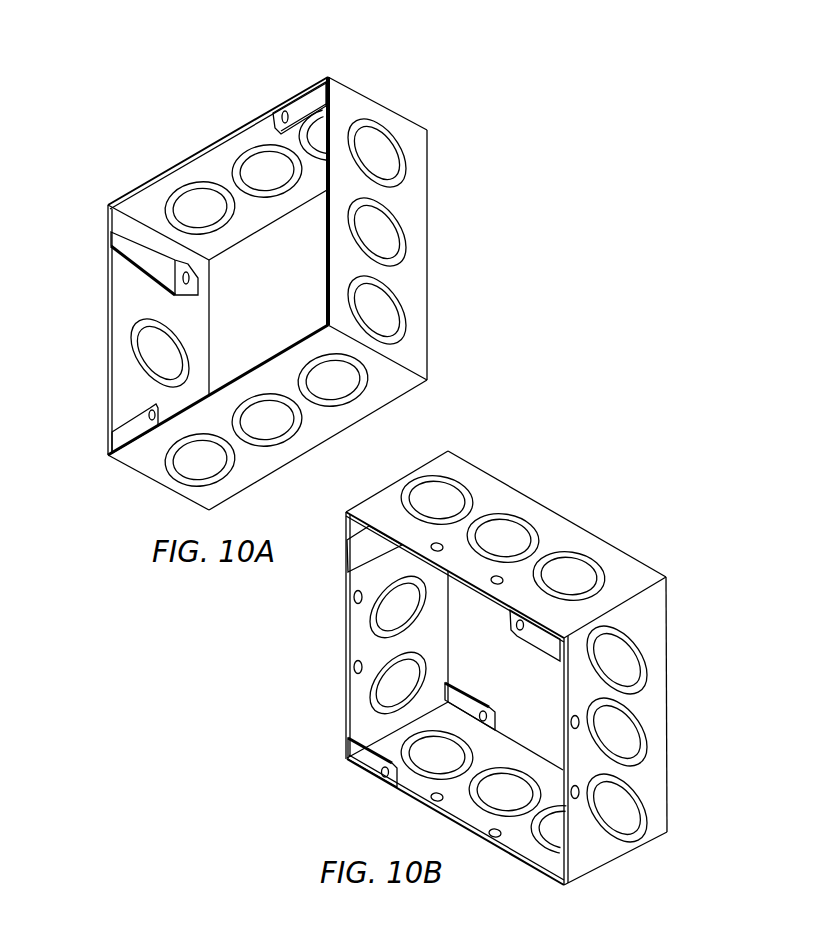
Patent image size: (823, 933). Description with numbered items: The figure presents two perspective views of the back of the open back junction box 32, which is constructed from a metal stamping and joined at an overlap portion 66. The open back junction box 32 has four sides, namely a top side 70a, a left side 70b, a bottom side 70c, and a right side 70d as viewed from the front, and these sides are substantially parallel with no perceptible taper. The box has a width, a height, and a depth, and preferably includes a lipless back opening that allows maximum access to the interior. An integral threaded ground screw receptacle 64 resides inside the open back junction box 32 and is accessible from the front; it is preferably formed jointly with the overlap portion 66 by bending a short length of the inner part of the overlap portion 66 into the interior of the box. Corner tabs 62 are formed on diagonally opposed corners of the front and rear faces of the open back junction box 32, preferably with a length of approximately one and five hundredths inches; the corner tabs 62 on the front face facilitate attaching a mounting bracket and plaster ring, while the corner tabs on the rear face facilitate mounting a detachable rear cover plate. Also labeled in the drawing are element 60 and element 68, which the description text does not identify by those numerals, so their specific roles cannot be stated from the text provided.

In FIG. 10A, the open back junction box 32 is at (268, 262).
In FIG. 10B, the open back junction box 32 is at (488, 660).
In FIG. 10A, the side wall body 60 is at (222, 152).
In FIG. 10B, the side wall body 60 is at (343, 627).
In FIG. 10A, the corner tabs 62 is at (310, 105).
In FIG. 10B, the corner tabs 62 is at (370, 766).
In FIG. 10A, the integral threaded ground screw receptacle 64 is at (187, 286).
In FIG. 10A, the overlap portion 66 is at (136, 274).
In FIG. 10B, the overlap portion 66 is at (344, 553).
In FIG. 10A, the interior opening 68 is at (150, 203).
In FIG. 10B, the interior opening 68 is at (357, 687).
In FIG. 10A, the top side 70a is at (262, 132).
In FIG. 10B, the top side 70a is at (497, 492).
In FIG. 10A, the left side 70b is at (428, 192).
In FIG. 10B, the left side 70b is at (657, 690).
In FIG. 10A, the bottom side 70c is at (317, 427).
In FIG. 10B, the bottom side 70c is at (463, 812).
In FIG. 10A, the right side 70d is at (120, 350).
In FIG. 10B, the right side 70d is at (360, 645).